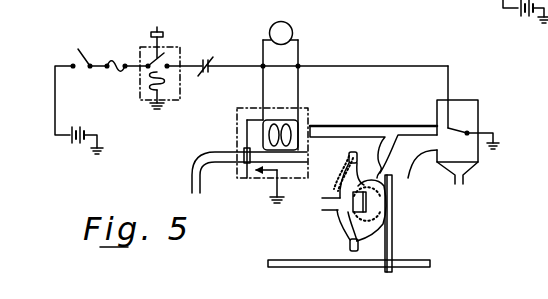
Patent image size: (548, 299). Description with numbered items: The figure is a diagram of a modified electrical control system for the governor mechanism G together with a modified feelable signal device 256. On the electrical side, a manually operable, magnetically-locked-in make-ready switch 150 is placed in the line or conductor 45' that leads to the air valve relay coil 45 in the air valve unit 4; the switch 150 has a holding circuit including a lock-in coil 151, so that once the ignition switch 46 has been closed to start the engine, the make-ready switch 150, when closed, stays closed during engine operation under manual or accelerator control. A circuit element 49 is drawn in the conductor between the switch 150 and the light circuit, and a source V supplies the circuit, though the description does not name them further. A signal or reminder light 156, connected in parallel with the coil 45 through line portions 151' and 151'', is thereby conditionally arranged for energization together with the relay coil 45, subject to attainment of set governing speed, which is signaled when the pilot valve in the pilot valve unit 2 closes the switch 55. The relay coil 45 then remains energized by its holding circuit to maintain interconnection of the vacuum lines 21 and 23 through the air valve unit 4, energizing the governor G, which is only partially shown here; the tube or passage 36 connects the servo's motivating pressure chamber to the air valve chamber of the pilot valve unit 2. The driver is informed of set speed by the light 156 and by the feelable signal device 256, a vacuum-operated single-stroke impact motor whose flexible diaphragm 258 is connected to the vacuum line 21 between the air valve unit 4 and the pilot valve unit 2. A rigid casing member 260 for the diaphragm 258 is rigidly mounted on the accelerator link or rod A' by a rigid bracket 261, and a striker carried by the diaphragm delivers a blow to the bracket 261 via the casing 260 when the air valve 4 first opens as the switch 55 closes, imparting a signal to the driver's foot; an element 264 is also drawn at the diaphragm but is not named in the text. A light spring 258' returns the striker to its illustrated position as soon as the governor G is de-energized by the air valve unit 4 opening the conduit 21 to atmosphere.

The voltage source / battery V is at (85, 150).
The ignition switch 46 is at (83, 48).
The line or conductor 45' is at (119, 82).
The make-ready switch 150 is at (173, 46).
The lock-in coil 151 is at (186, 94).
The capacitor 49 is at (204, 58).
The line portion 151' is at (255, 47).
The signal or reminder light 156 is at (294, 31).
The line portion 151'' is at (372, 81).
The air valve unit 4 is at (316, 112).
The governor mechanism G is at (410, 91).
The air valve relay coil 45 is at (290, 161).
The tube 23 is at (219, 150).
The vacuum line 21 is at (412, 121).
The pilot valve unit 2 is at (485, 100).
The tube or passage 36 is at (422, 153).
The switch 55 is at (456, 124).
The light spring 258' is at (408, 156).
The rigid casing member 260 is at (382, 235).
The strap 264 is at (344, 164).
The flexible diaphragm 258 is at (324, 219).
The feelable signal device 256 is at (340, 237).
The rigid bracket 261 is at (392, 204).
The rod A' is at (362, 251).